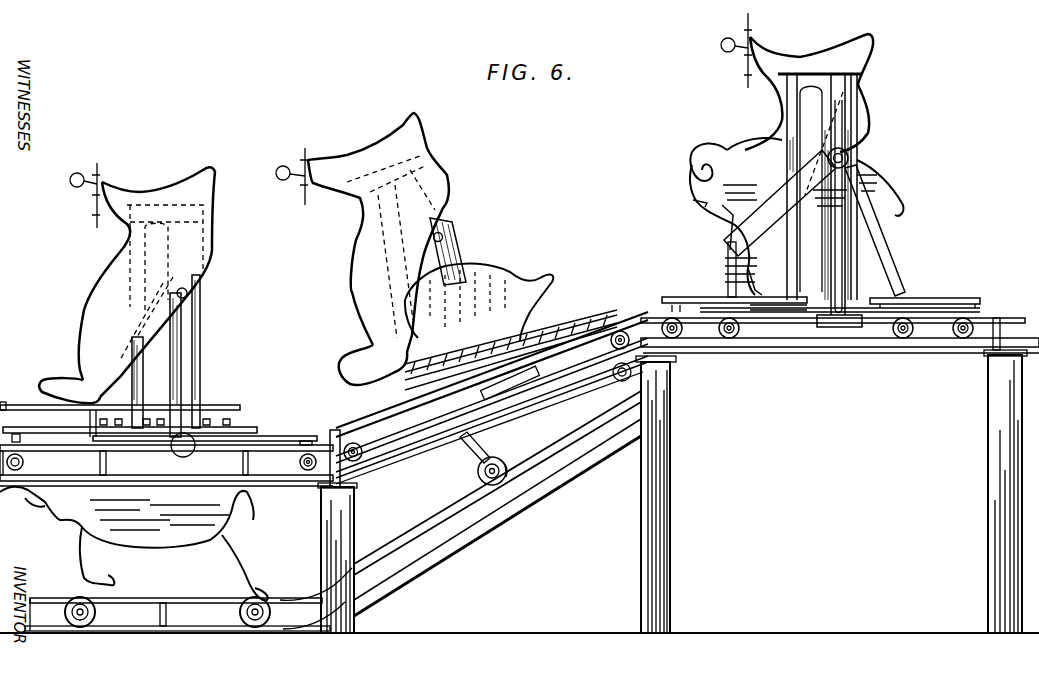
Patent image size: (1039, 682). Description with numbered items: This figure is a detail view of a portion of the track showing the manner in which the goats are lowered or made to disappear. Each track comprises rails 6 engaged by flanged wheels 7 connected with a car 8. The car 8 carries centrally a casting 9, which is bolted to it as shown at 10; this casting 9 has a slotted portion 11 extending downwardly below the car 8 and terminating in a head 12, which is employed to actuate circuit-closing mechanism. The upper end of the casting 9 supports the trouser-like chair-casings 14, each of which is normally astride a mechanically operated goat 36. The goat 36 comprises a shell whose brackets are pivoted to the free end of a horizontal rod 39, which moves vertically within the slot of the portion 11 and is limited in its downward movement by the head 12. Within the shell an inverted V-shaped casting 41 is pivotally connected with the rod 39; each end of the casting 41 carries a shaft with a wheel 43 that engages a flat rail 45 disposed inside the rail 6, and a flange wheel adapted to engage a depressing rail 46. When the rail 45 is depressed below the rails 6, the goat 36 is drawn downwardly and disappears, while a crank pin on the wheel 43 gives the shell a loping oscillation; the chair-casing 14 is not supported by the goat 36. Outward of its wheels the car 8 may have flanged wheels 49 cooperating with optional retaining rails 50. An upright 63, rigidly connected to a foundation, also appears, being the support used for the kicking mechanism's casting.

The rails 6 is at (300, 468).
The flanged wheels 7 is at (320, 482).
The car 8 is at (278, 428).
The casting 9 is at (836, 84).
The bolts 10 is at (216, 406).
The slotted portion 11 is at (185, 338).
The head 12 is at (512, 386).
The chair-casing 14 is at (908, 108).
The mechanically operated goat 36 is at (177, 535).
The horizontal rod 39 is at (852, 152).
The inverted V-shaped casting 41 is at (878, 236).
The wheel 43 is at (501, 480).
The flat rail 45 is at (437, 549).
The depressing rail 46 is at (400, 528).
The flanged wheels 49 is at (372, 455).
The retaining rails 50 is at (355, 434).
The upright 63 is at (13, 405).